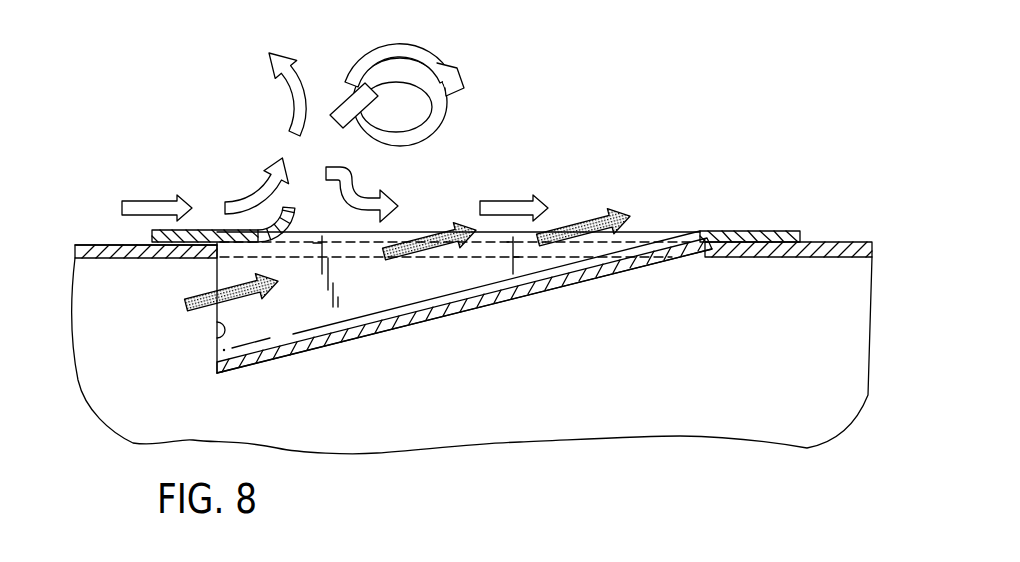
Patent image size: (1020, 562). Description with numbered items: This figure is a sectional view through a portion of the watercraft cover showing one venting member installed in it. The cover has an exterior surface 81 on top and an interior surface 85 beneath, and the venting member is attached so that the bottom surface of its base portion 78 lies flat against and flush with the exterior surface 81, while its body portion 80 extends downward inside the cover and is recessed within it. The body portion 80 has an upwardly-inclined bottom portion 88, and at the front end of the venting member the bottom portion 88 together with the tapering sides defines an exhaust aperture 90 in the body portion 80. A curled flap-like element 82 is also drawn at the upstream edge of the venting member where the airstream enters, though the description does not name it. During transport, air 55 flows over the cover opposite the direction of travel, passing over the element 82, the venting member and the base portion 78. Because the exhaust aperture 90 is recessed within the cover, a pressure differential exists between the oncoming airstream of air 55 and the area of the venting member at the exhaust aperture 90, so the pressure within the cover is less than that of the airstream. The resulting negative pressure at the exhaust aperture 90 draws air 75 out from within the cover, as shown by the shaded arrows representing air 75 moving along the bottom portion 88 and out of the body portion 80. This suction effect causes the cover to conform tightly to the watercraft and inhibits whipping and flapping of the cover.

The air 55 is at (148, 200).
The exterior surface 81 is at (98, 244).
The interior surface 85 is at (120, 259).
The flap 82 is at (293, 213).
The exhaust aperture 90 is at (217, 340).
The air 75 is at (597, 212).
The base portion 78 is at (747, 232).
The body portion 80 is at (578, 283).
The bottom portion 88 is at (440, 317).